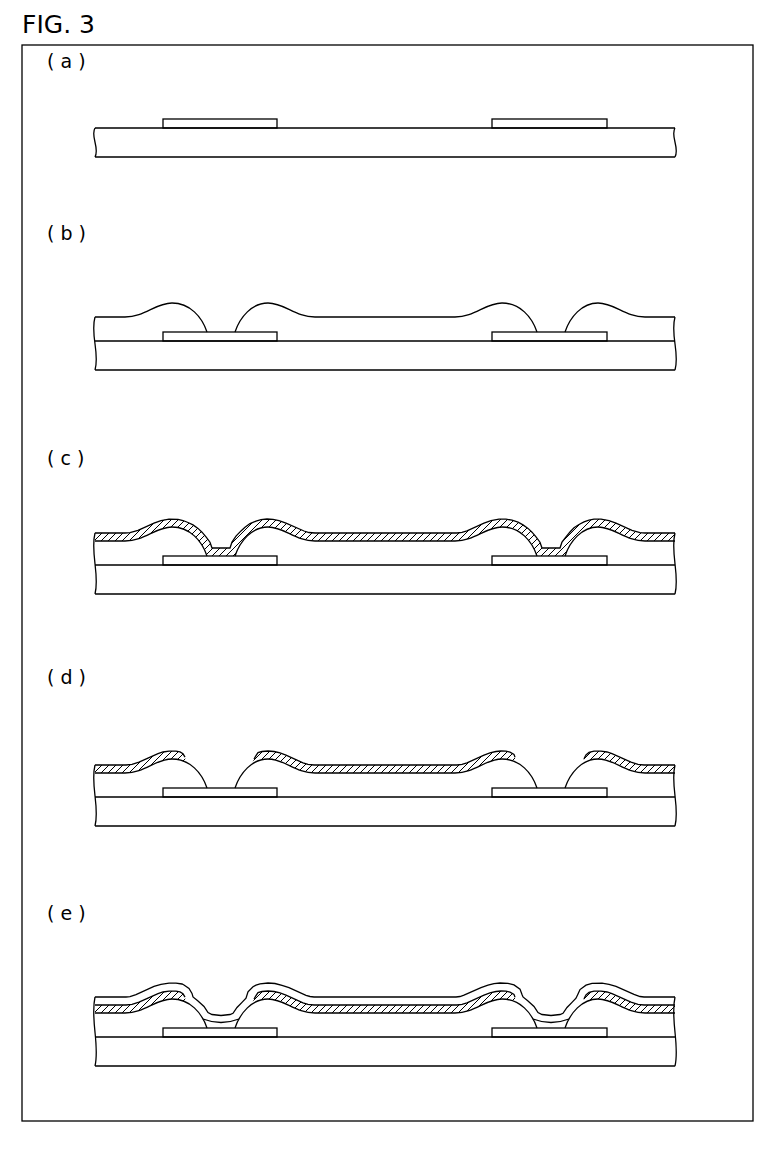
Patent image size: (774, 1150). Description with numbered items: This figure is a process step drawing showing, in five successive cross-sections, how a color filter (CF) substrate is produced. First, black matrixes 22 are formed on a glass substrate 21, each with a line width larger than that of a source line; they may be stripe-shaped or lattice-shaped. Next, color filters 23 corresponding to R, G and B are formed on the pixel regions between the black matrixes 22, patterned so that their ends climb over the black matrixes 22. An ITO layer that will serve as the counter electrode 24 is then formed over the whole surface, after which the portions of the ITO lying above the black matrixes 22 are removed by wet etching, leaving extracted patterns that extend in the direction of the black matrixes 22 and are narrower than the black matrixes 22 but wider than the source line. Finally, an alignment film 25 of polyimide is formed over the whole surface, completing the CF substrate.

The glass substrate 21 is at (410, 597).
The black matrixes 22 is at (385, 611).
The color filters 23 is at (410, 703).
The counter electrode 24 is at (410, 768).
The alignment film 25 is at (410, 997).